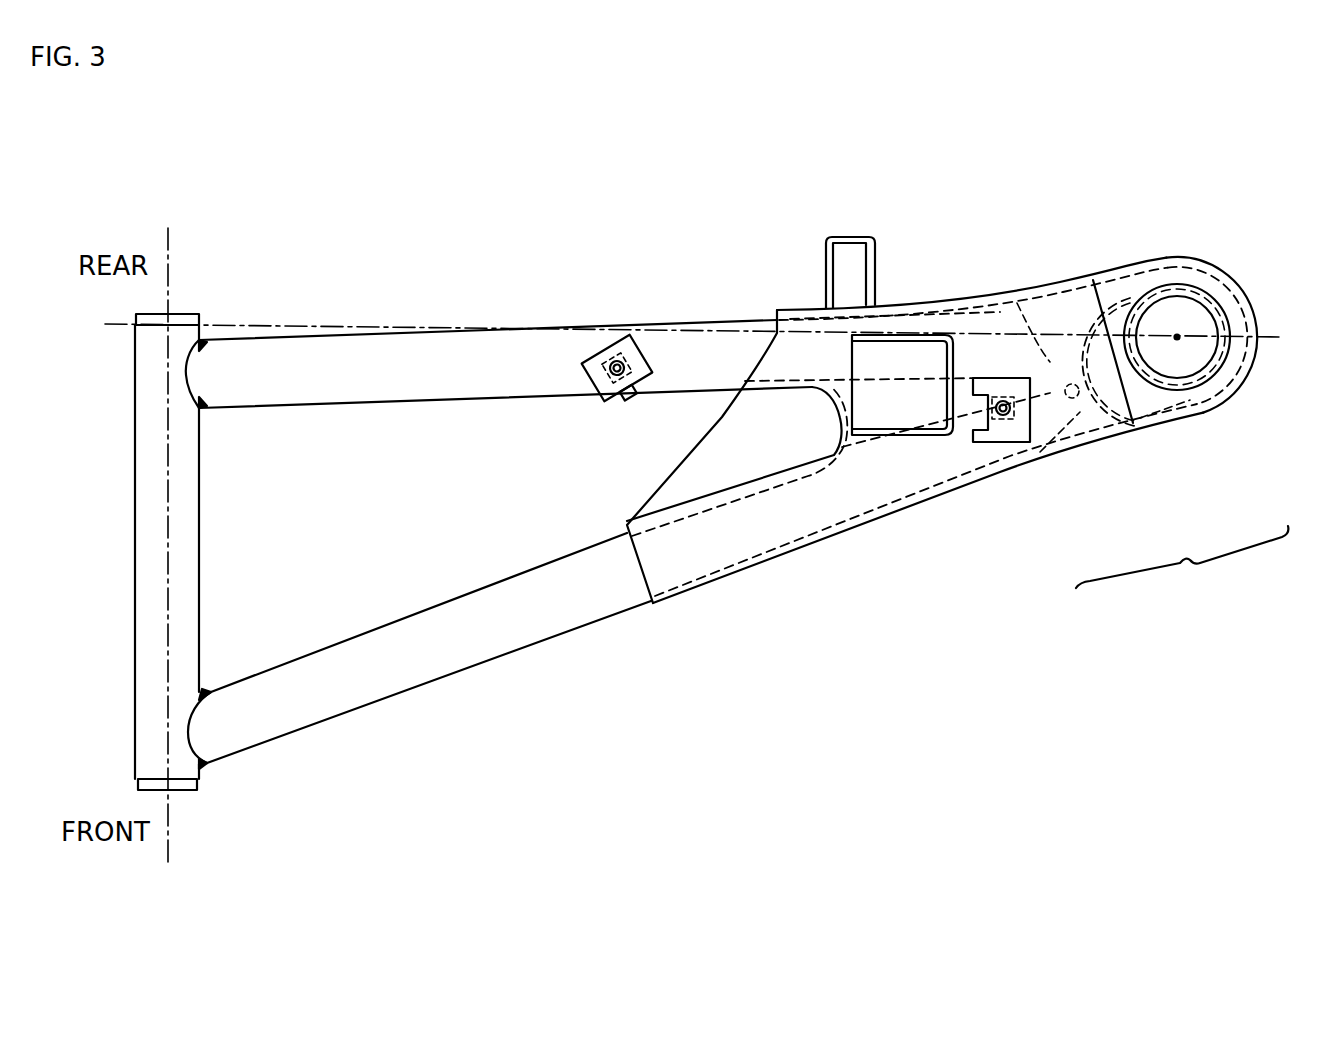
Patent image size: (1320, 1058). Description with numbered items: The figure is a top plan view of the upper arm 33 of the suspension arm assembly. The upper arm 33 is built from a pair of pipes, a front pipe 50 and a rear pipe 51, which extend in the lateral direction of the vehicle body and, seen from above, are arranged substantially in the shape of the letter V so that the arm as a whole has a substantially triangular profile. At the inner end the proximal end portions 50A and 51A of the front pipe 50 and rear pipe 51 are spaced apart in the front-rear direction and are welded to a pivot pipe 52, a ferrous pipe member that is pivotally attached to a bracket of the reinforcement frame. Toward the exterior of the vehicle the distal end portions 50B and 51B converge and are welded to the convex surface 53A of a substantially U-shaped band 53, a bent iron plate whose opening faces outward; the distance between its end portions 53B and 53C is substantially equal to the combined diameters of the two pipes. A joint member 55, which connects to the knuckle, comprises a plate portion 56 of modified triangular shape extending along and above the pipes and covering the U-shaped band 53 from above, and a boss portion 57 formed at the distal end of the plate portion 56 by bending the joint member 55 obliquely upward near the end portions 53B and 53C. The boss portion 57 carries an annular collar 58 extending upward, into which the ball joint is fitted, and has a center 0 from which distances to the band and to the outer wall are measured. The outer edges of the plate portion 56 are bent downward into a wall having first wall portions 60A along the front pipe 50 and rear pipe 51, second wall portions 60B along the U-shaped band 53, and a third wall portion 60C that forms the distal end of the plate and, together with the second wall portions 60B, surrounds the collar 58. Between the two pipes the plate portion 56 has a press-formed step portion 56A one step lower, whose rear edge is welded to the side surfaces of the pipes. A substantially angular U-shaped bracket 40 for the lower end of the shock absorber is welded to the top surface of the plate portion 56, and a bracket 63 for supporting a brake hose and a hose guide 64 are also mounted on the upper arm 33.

The upper arm 33 is at (540, 295).
The bracket 40 is at (913, 437).
The front pipe 50 is at (521, 628).
The proximal end portion of the front pipe 50A is at (188, 733).
The distal end portion of the front pipe 50B is at (1077, 403).
The rear pipe 51 is at (420, 355).
The proximal end portion of the rear pipe 51A is at (190, 383).
The distal end portion of the rear pipe 51B is at (1017, 303).
The pivot pipe 52 is at (191, 544).
The U-shaped band 53 is at (1117, 417).
The convex surface 53A is at (1050, 362).
The end portion of the U-shaped band 53B is at (1108, 288).
The end portion of the U-shaped band 53C is at (1160, 420).
The joint member 55 is at (1182, 562).
The plate portion 56 is at (992, 452).
The step portion 56A is at (712, 450).
The boss portion 57 is at (1232, 405).
The annular collar 58 is at (1215, 372).
The first wall portions 60A is at (773, 560).
The second wall portions 60B is at (1087, 280).
The third wall portion 60C is at (1248, 302).
The bracket 63 is at (640, 358).
The hose guide 64 is at (826, 247).
The center of the boss portion 0 is at (1177, 335).